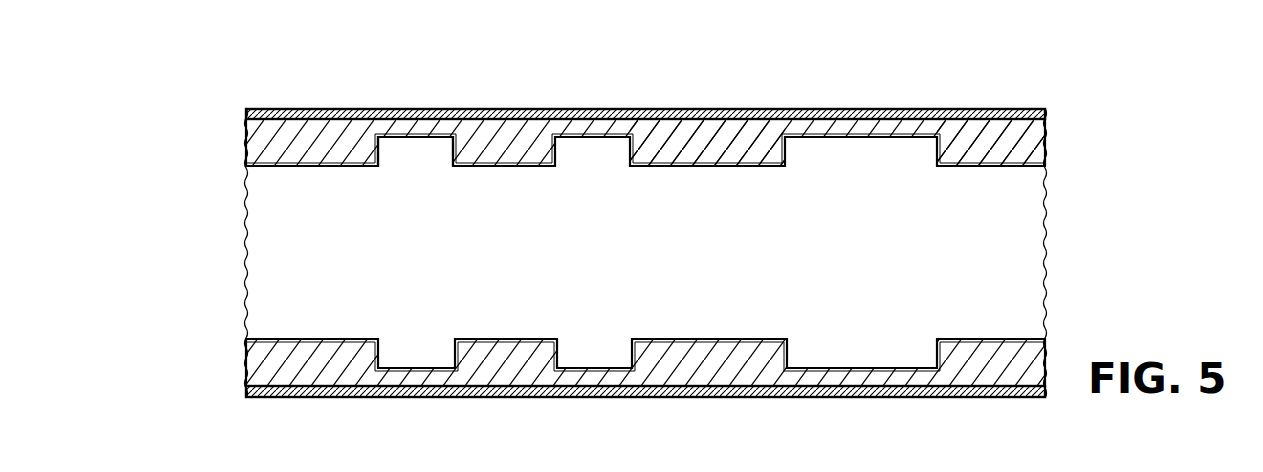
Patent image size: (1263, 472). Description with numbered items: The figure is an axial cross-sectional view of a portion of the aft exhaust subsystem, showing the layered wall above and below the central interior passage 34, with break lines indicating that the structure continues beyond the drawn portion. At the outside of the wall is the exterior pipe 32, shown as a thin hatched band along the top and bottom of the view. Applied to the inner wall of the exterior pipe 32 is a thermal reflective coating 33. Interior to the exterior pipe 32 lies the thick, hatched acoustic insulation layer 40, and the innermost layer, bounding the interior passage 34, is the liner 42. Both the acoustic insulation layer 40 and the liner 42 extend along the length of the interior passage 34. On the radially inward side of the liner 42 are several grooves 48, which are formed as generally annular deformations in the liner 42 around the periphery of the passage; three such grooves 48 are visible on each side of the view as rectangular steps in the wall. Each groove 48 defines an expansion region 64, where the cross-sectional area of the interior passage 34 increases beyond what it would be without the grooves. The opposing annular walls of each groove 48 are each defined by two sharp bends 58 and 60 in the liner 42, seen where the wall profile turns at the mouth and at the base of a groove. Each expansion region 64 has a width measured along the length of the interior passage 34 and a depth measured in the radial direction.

The exterior pipe 32 is at (311, 108).
The thermal reflective coating 33 is at (527, 107).
The interior passage 34 is at (198, 284).
The acoustic insulation layer 40 is at (733, 148).
The liner 42 is at (985, 155).
The groove 48 is at (413, 148).
The sharp bend 58 is at (383, 337).
The sharp bend 60 is at (383, 370).
The expansion region 64 is at (392, 177).